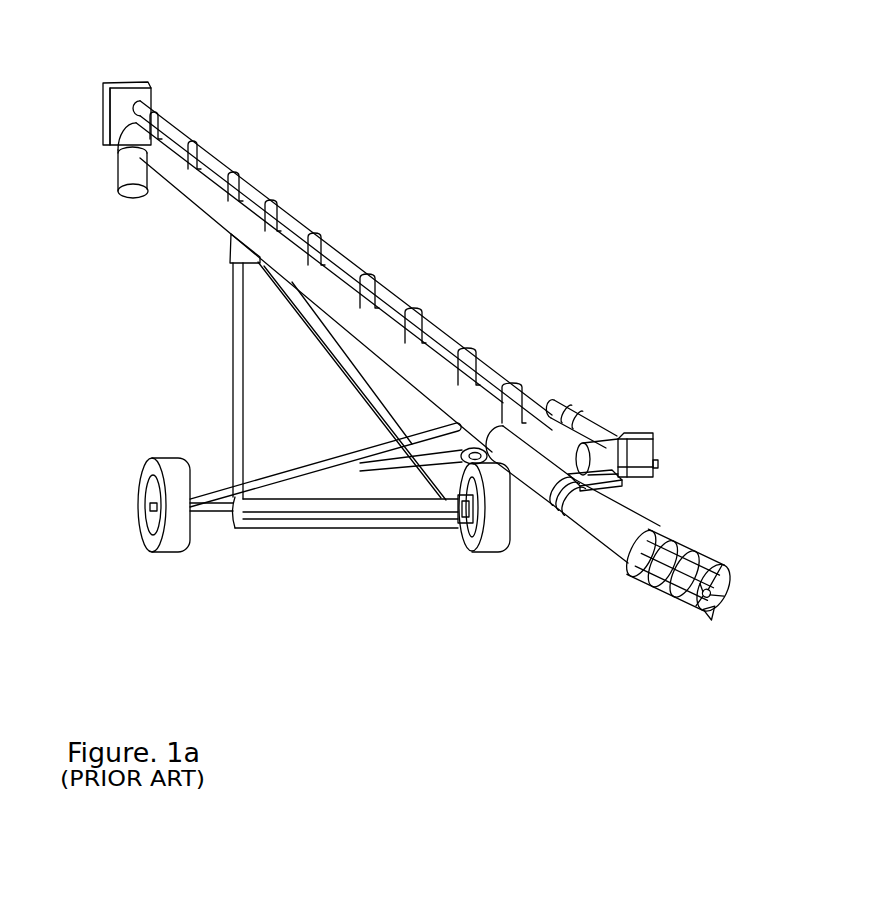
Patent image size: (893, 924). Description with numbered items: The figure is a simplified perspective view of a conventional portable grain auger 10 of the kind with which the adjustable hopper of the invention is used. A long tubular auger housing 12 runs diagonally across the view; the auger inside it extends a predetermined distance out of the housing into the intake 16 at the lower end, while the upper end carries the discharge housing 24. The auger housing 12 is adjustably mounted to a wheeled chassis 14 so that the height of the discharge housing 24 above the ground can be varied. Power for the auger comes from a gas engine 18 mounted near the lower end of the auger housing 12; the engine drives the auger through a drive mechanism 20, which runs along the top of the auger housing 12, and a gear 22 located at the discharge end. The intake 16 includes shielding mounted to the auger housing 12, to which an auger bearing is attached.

The portable grain auger 10 is at (540, 80).
The tubular auger housing 12 is at (540, 473).
The chassis 14 is at (242, 378).
The intake 16 is at (694, 549).
The gas engine 18 is at (643, 455).
The drive mechanism 20 is at (303, 228).
The gear 22 is at (135, 92).
The discharge housing 24 is at (136, 194).